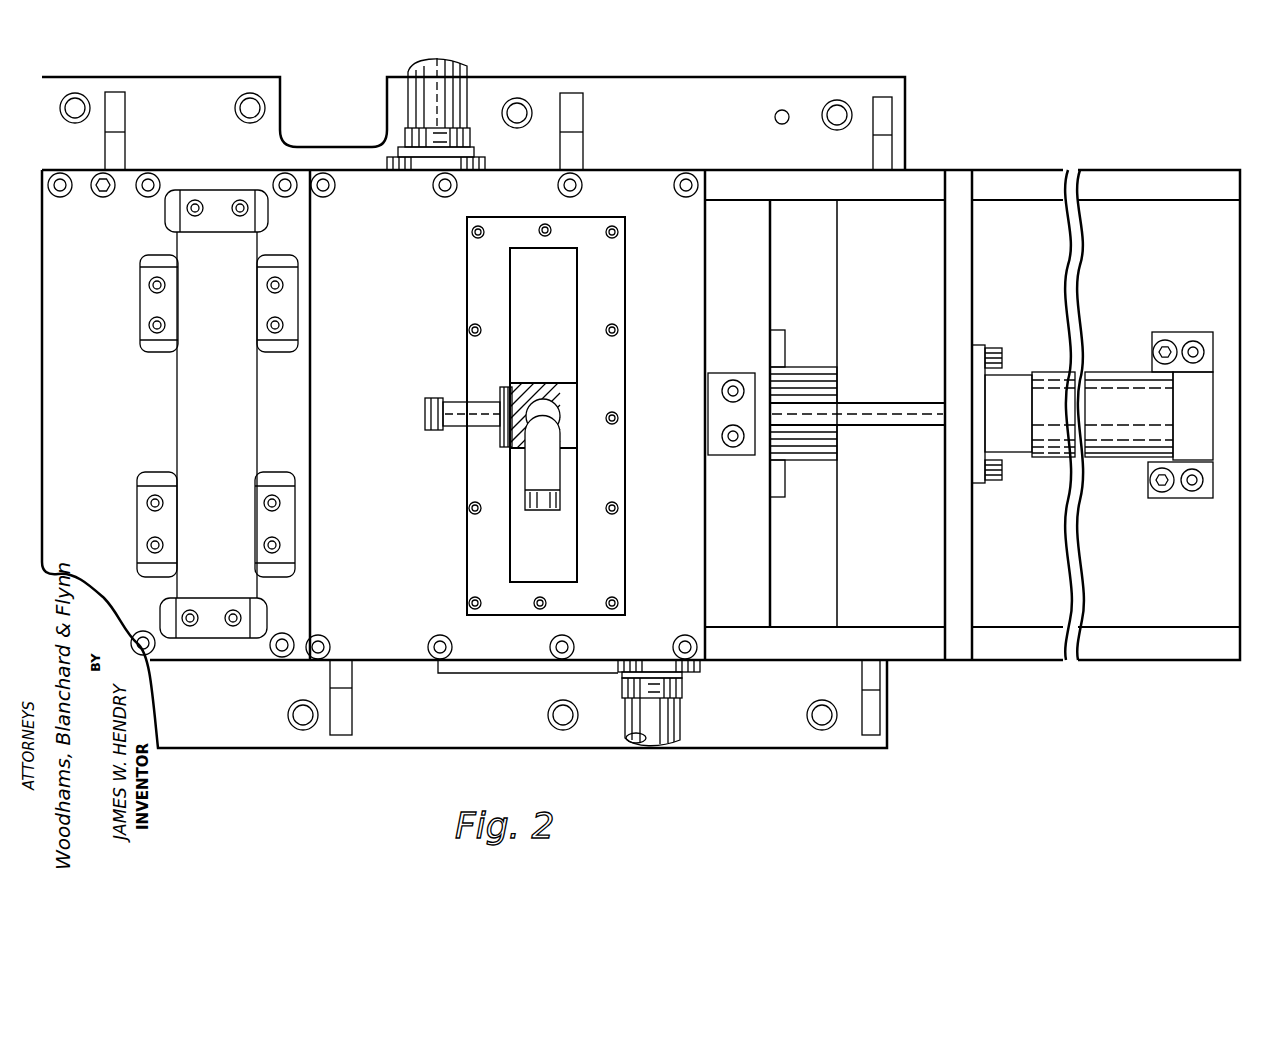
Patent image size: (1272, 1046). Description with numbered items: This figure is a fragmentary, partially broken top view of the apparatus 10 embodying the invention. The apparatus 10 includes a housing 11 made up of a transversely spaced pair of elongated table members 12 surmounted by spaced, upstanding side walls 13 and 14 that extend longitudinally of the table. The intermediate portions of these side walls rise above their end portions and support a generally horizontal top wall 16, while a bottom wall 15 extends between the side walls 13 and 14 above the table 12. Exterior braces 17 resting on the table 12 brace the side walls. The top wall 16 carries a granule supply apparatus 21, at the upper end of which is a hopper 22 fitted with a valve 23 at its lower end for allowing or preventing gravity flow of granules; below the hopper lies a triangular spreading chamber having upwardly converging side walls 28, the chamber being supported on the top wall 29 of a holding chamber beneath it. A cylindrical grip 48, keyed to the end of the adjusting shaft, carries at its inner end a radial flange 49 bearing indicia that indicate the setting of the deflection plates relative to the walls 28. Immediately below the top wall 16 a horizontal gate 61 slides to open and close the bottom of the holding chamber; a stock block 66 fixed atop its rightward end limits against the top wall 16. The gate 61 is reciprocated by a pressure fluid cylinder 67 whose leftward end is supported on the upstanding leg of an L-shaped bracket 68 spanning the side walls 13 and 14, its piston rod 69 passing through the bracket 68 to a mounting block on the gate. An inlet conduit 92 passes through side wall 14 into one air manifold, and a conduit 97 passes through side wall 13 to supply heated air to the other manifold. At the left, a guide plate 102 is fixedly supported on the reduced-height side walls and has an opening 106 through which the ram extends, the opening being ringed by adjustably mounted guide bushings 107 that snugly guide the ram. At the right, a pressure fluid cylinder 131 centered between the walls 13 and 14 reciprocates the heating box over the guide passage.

The apparatus 10 is at (1080, 805).
The housing 11 is at (945, 165).
The table members 12 is at (786, 740).
The side wall 13 is at (1000, 655).
The side wall 14 is at (1013, 186).
The bottom wall 15 is at (1145, 215).
The top wall 16 is at (693, 246).
The exterior braces 17 is at (878, 110).
The granule supply apparatus 21 is at (438, 580).
The hopper 22 is at (568, 383).
The valve 23 is at (530, 505).
The side walls of spreading chamber 28 is at (558, 562).
The top wall of holding chamber 29 is at (607, 440).
The grip 48 is at (462, 400).
The radial flange 49 is at (504, 387).
The gate 61 is at (766, 277).
The stock block 66 is at (715, 378).
The pressure fluid cylinder 67 is at (1060, 390).
The L-shaped bracket 68 is at (962, 278).
The piston rod 69 is at (910, 410).
The inlet conduit 92 is at (425, 105).
The conduit 97 is at (668, 724).
The guide plate 102 is at (179, 415).
The opening 106 is at (178, 400).
The guide bushings 107 is at (150, 300).
The pressure fluid cylinder 131 is at (1128, 385).